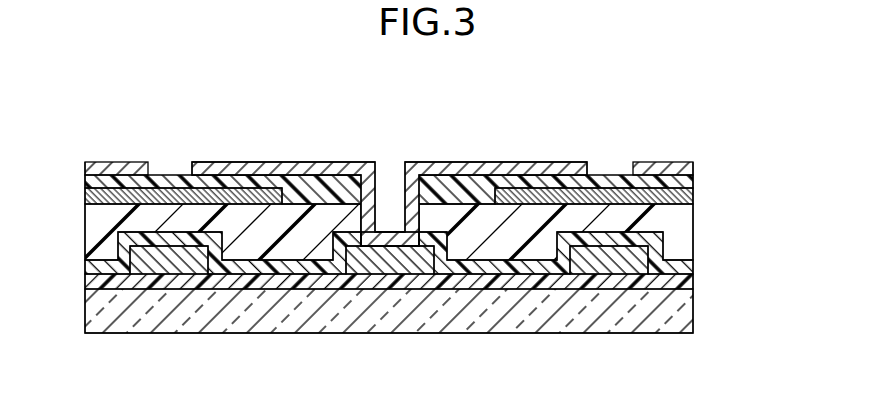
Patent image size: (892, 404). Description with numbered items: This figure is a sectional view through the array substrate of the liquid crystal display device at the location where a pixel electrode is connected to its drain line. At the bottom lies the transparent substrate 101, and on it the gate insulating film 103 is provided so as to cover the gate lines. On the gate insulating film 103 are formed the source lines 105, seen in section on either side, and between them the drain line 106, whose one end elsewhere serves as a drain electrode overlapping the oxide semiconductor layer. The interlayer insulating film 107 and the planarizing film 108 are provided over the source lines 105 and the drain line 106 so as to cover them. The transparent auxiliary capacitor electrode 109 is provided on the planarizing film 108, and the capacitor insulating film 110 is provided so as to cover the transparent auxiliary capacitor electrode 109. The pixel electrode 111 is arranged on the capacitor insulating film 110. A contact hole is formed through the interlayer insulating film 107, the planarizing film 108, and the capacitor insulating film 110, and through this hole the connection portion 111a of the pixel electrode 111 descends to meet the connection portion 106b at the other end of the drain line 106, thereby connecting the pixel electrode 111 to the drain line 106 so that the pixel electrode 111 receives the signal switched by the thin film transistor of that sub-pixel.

The transparent substrate 101 is at (686, 317).
The gate insulating film 103 is at (688, 284).
The source line 105 is at (178, 265).
The drain line 106 is at (408, 265).
The connection portion 106b is at (388, 232).
The interlayer insulating film 107 is at (688, 265).
The planarizing film 108 is at (686, 230).
The transparent auxiliary capacitor electrode 109 is at (686, 193).
The capacitor insulating film 110 is at (686, 183).
The pixel electrode 111 is at (498, 167).
The connection portion 111a is at (394, 176).